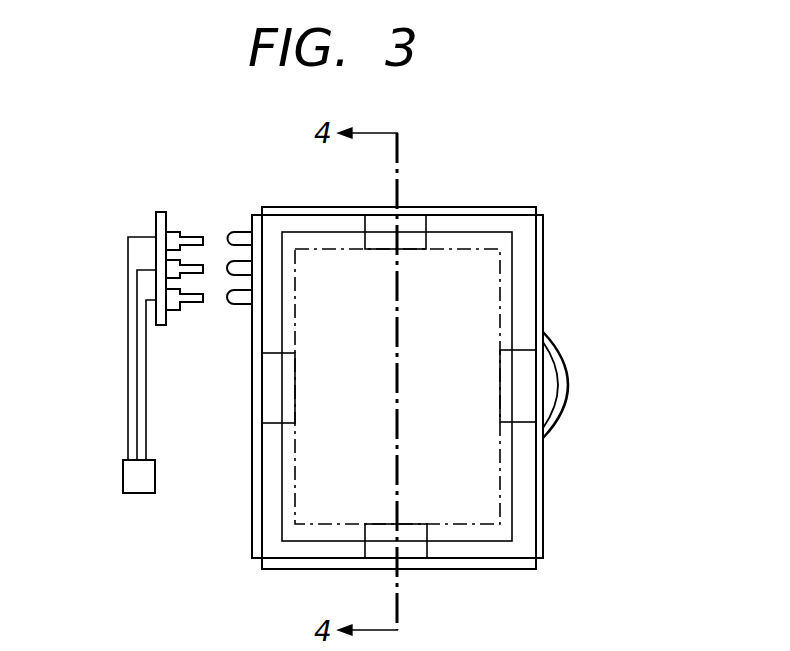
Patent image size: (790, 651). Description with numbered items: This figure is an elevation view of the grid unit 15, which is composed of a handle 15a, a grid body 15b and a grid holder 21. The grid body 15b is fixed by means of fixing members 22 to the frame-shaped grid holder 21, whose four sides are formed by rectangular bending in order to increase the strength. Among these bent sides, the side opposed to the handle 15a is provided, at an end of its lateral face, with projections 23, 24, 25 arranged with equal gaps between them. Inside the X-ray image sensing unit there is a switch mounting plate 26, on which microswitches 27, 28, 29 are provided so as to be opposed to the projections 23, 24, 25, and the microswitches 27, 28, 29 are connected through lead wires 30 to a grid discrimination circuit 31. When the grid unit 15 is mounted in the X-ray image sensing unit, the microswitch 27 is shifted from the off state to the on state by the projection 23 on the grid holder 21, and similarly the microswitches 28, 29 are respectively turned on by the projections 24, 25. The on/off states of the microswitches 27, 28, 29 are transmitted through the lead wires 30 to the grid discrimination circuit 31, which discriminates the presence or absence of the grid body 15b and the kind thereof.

The grid unit 15 is at (563, 565).
The handle 15a is at (562, 390).
The grid body 15b is at (470, 508).
The grid holder 21 is at (528, 487).
The fixing member 22 is at (523, 365).
The projection 23 is at (233, 232).
The projection 24 is at (218, 268).
The projection 25 is at (233, 305).
The switch mounting plate 26 is at (156, 222).
The microswitch 27 is at (175, 232).
The microswitch 28 is at (170, 268).
The microswitch 29 is at (172, 312).
The lead wire 30 is at (128, 405).
The grid discrimination circuit 31 is at (137, 495).